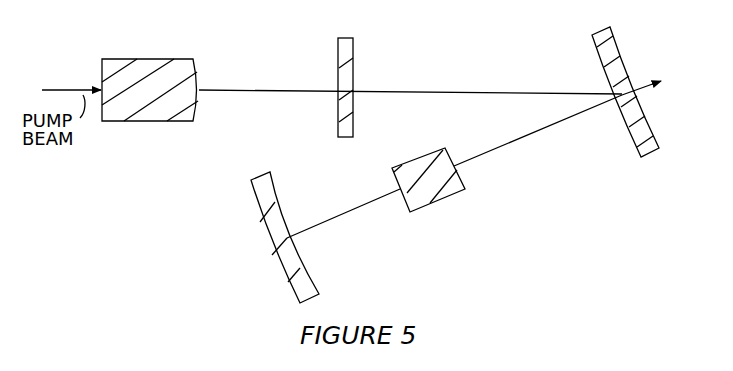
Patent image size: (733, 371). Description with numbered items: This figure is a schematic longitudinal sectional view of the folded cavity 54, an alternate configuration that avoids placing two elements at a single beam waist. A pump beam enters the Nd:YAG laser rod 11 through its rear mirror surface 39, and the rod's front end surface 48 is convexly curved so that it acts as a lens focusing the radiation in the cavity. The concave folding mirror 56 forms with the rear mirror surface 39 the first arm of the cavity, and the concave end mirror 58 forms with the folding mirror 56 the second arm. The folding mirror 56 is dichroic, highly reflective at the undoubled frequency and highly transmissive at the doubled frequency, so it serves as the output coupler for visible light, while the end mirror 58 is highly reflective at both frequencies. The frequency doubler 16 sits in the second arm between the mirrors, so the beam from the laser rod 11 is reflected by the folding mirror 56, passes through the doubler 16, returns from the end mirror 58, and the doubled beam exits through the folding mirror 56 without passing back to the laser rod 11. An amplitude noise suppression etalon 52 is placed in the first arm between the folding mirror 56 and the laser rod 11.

The Nd:YAG laser rod 11 is at (174, 59).
The frequency doubler 16 is at (451, 152).
The rear mirror surface 39 is at (101, 64).
The front end surface 48 is at (200, 80).
The etalon 52 is at (355, 60).
The folded cavity 54 is at (496, 213).
The folding mirror 56 is at (650, 157).
The end mirror 58 is at (268, 174).